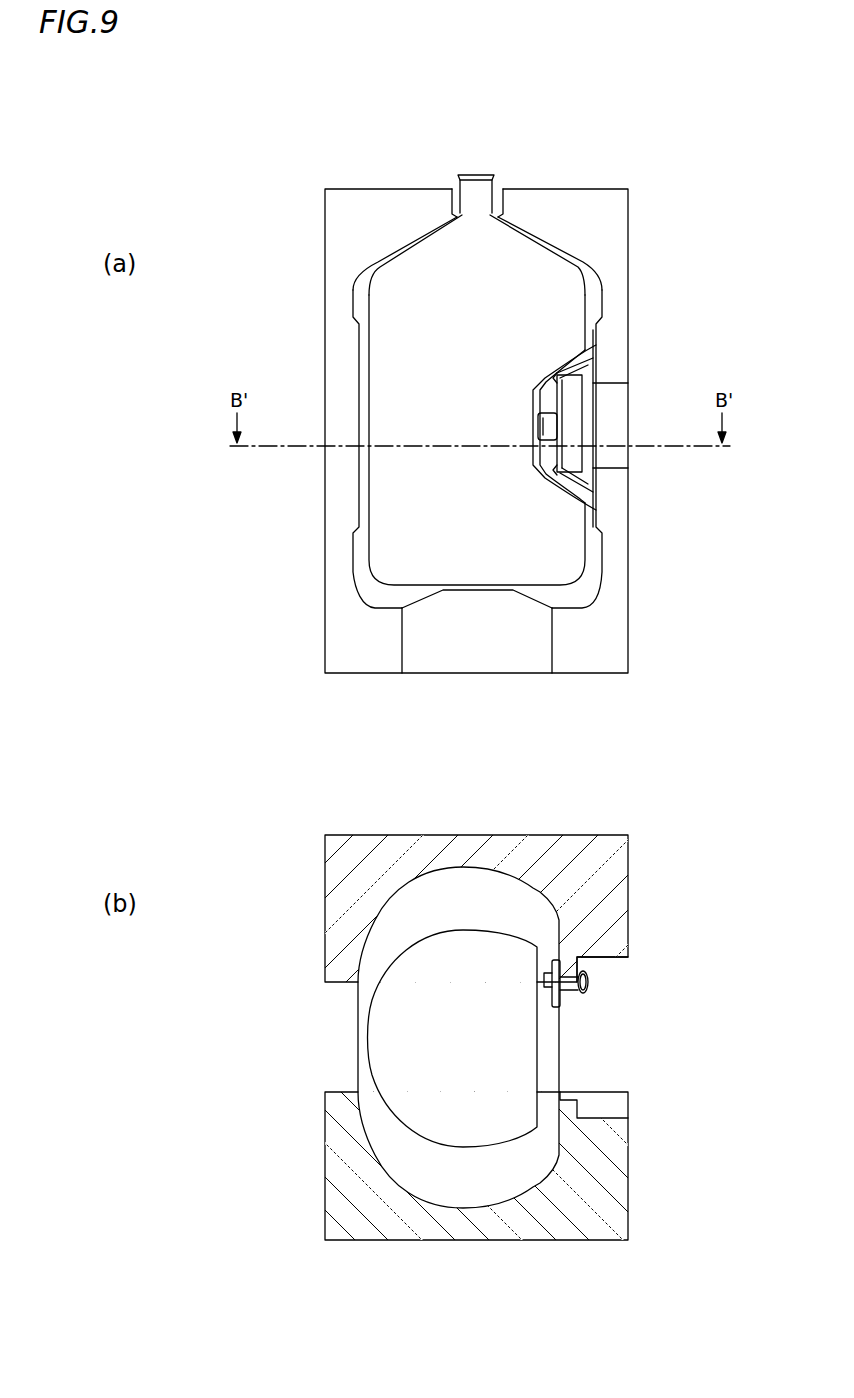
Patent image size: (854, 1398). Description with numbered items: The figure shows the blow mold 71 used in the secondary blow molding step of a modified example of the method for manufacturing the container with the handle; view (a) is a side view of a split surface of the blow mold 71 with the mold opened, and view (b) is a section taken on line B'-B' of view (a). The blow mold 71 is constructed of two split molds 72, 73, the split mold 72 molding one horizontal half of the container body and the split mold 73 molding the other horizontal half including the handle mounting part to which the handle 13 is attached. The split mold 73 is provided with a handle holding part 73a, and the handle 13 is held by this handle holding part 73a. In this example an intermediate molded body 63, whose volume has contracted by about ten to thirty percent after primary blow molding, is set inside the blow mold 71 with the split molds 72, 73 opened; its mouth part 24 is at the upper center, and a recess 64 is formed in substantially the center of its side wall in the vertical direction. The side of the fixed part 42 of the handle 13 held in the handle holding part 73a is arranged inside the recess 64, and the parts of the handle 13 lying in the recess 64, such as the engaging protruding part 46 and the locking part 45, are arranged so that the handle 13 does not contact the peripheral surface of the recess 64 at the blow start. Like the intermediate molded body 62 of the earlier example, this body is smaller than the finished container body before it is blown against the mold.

The handle 13 is at (587, 407).
The mouth part 24 is at (478, 173).
The fixed part 42 is at (550, 402).
The locking part 45 is at (593, 493).
The engaging protruding part 46 is at (545, 453).
The intermediate molded body 62 is at (404, 1015).
The intermediate molded body 63 is at (512, 222).
The recess 64 is at (545, 390).
The blow mold 71 is at (647, 213).
The split mold 72 is at (630, 1197).
The split mold 73 is at (630, 274).
The handle holding part 73a is at (620, 468).